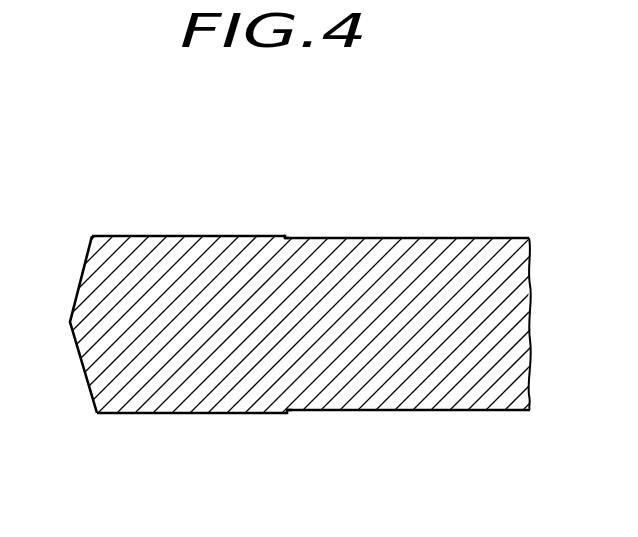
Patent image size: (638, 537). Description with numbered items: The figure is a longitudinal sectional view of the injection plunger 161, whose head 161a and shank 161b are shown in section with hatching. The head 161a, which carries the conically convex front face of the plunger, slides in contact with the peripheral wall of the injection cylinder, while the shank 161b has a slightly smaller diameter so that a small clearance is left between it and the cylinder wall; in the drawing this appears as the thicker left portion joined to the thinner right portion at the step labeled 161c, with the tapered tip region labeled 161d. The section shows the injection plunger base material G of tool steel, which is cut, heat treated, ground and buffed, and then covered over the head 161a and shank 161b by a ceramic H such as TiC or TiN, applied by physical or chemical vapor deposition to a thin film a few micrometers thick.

The injection plunger 161 is at (241, 204).
The head 161a is at (180, 235).
The shank 161b is at (366, 238).
The step between upper surfaces 161c is at (284, 236).
The pointed tip of pawl member 161d is at (90, 234).
The ceramic H is at (229, 413).
The injection plunger base material G is at (373, 383).